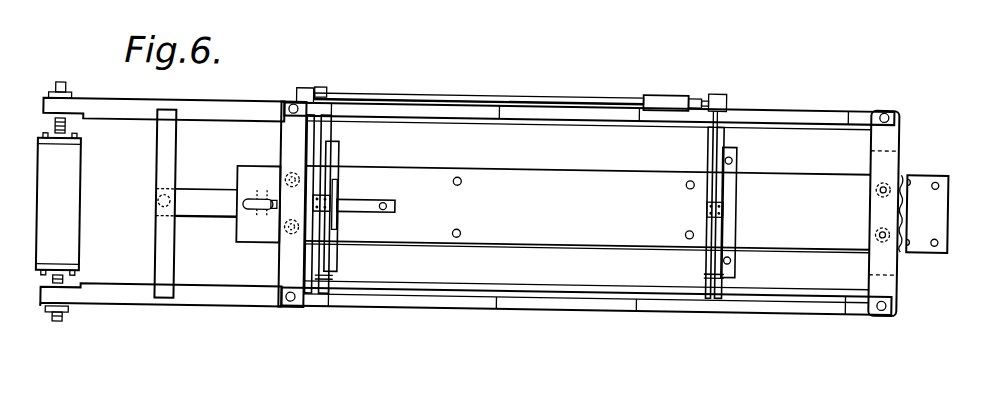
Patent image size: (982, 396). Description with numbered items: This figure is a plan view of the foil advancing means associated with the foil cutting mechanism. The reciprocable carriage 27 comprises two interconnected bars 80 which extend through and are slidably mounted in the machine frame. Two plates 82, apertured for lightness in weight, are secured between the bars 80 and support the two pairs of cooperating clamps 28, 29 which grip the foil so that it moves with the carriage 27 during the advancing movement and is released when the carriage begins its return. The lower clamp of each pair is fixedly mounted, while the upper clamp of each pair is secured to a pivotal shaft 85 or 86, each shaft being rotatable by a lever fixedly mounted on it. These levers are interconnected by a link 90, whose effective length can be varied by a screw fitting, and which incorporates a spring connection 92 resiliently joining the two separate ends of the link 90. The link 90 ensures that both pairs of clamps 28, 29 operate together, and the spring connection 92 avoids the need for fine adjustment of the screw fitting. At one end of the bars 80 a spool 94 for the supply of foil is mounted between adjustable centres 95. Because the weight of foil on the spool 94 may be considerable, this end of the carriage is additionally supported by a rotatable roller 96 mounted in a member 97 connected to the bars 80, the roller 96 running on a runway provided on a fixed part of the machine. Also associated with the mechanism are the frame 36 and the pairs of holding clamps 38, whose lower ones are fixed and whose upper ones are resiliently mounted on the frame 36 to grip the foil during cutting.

The reciprocable carriage 27 is at (198, 118).
The cooperating clamp 28 is at (332, 168).
The cooperating clamp 29 is at (730, 177).
The frame 36 is at (765, 110).
The holding clamp 38 is at (283, 149).
The interconnected bar 80 is at (112, 110).
The apertured plate 82 is at (330, 136).
The pivotal shaft 85 is at (320, 281).
The pivotal shaft 86 is at (713, 274).
The link 90 is at (440, 99).
The spring connection 92 is at (680, 88).
The spool 94 is at (75, 221).
The adjustable centre 95 is at (68, 130).
The rotatable roller 96 is at (258, 215).
The member 97 is at (210, 217).